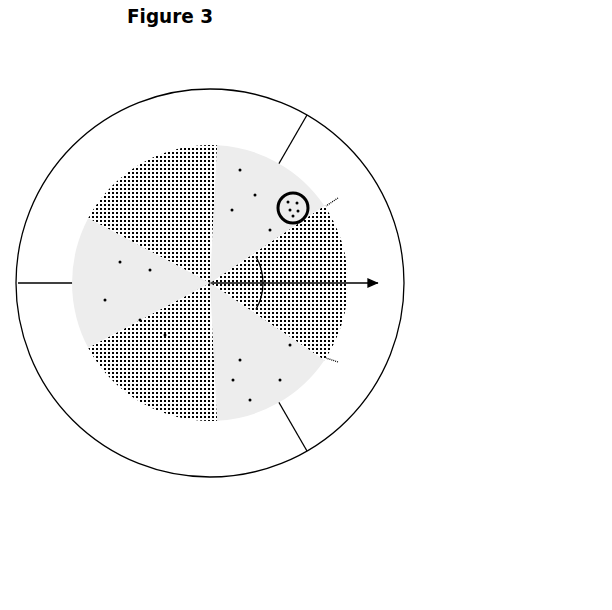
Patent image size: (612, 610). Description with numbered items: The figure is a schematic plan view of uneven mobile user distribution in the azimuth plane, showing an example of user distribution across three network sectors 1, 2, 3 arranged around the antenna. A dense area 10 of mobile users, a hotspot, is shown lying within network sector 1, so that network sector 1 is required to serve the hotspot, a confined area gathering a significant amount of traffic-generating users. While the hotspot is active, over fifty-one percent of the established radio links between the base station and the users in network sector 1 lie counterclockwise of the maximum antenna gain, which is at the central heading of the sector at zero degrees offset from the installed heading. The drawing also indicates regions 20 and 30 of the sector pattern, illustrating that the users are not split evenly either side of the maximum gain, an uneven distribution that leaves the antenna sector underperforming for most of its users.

The network sector 1 is at (106, 148).
The network sector 2 is at (389, 238).
The network sector 3 is at (142, 450).
The dense area of mobile users 10 is at (306, 187).
The high gain sector 20 is at (336, 265).
The low gain sector 30 is at (275, 246).